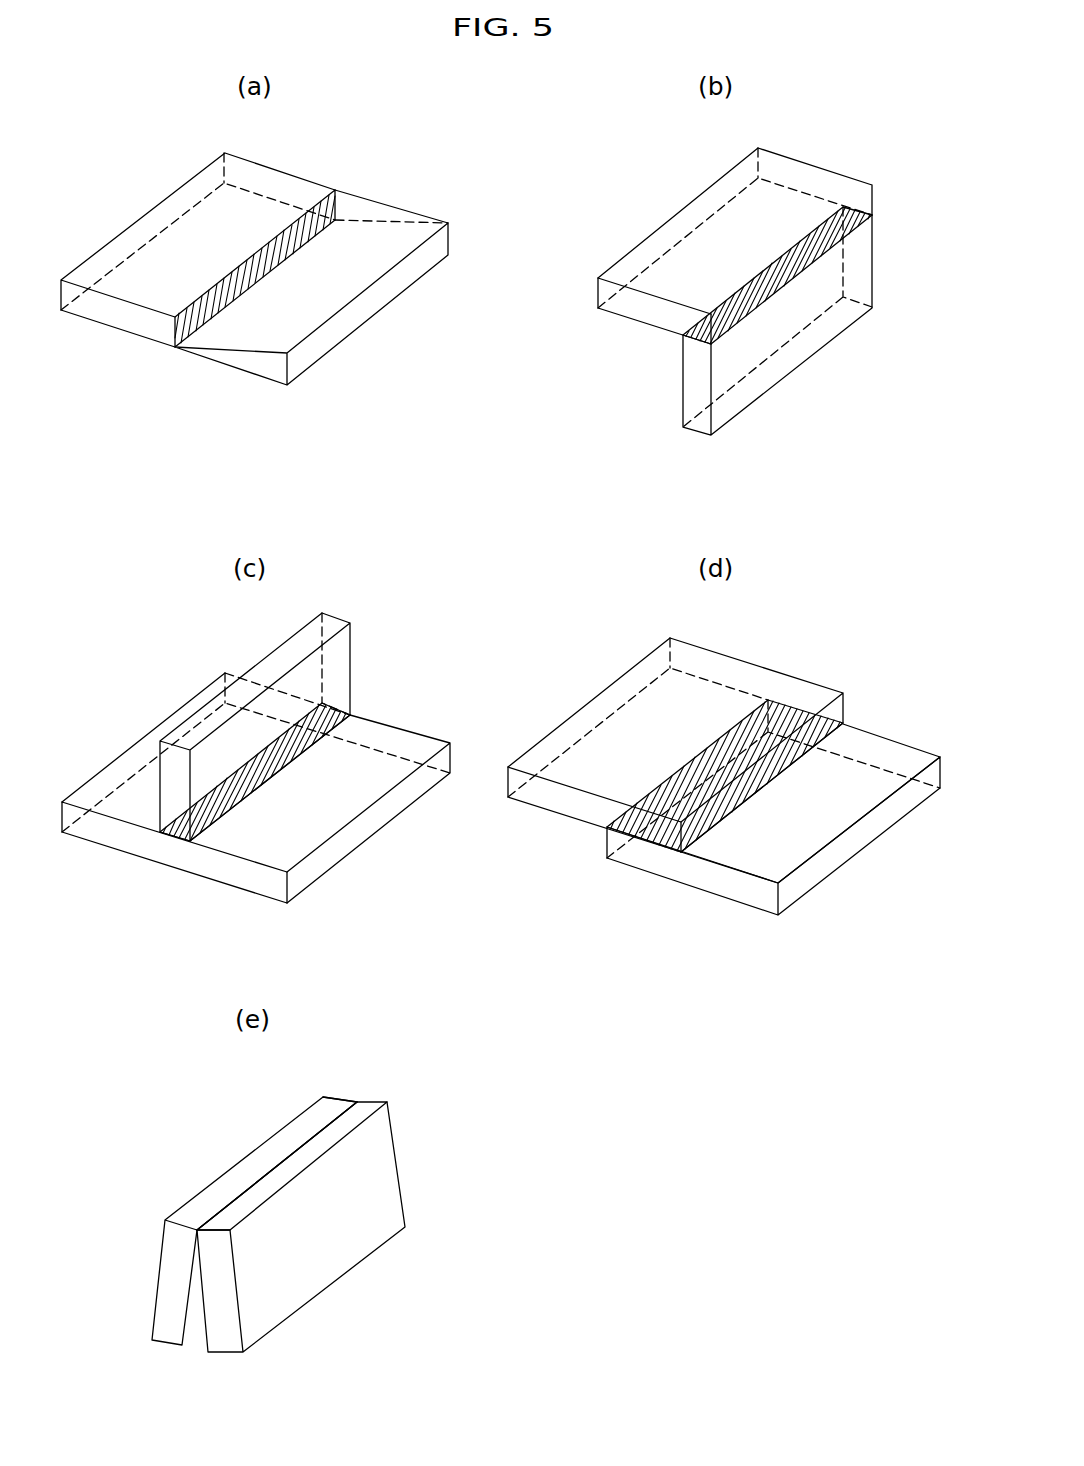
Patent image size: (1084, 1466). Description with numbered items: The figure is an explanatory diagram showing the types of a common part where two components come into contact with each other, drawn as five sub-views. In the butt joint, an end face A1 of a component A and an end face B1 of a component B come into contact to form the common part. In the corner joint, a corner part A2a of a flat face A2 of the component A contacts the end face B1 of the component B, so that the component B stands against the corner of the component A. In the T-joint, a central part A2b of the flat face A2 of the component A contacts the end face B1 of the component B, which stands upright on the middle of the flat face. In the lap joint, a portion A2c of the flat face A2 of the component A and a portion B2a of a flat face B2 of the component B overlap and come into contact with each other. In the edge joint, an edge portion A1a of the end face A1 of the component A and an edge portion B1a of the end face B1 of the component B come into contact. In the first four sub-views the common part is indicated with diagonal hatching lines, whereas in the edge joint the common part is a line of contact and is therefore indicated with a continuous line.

The component A is at (155, 200).
The component B is at (400, 265).
The end face of component A A1 is at (209, 293).
The end face of component B B1 is at (363, 1110).
The flat face of component A A2 is at (643, 323).
The corner part of flat face A2 A2a is at (790, 247).
The central part of flat face A2 A2b is at (228, 793).
The portion of flat face A2 A2c is at (722, 742).
The flat face of component B B2 is at (878, 750).
The portion of flat face B2 B2a is at (725, 776).
The edge portion of end face A1 A1a is at (317, 1134).
The edge portion of end face B1 B1a is at (277, 1163).